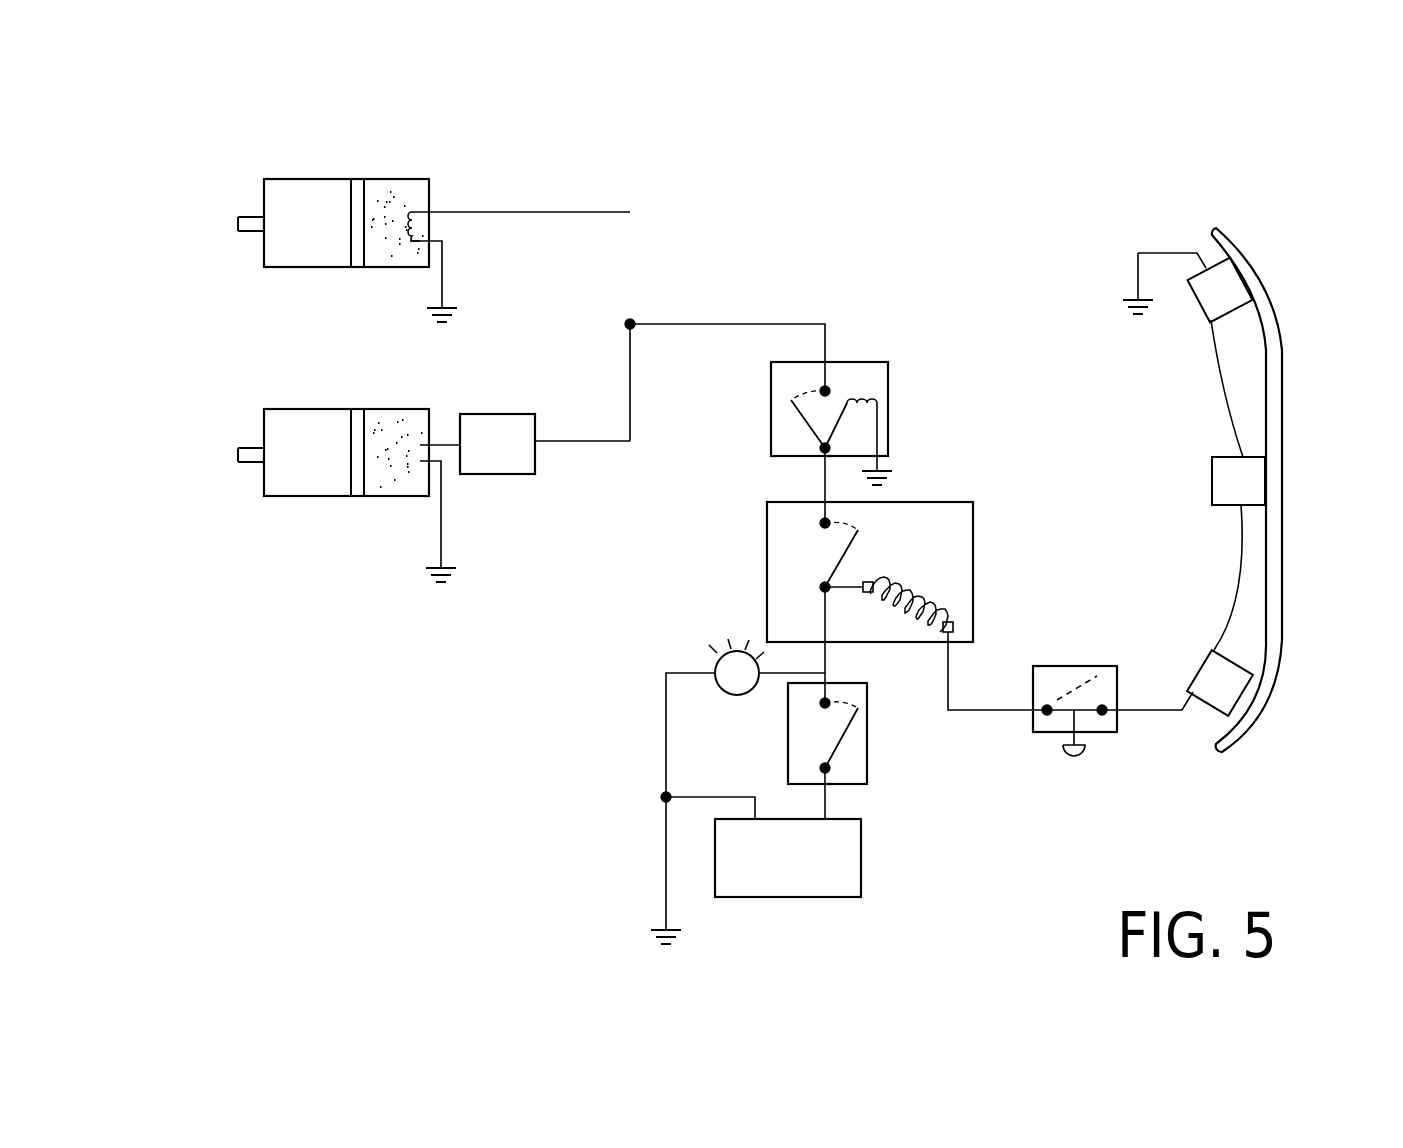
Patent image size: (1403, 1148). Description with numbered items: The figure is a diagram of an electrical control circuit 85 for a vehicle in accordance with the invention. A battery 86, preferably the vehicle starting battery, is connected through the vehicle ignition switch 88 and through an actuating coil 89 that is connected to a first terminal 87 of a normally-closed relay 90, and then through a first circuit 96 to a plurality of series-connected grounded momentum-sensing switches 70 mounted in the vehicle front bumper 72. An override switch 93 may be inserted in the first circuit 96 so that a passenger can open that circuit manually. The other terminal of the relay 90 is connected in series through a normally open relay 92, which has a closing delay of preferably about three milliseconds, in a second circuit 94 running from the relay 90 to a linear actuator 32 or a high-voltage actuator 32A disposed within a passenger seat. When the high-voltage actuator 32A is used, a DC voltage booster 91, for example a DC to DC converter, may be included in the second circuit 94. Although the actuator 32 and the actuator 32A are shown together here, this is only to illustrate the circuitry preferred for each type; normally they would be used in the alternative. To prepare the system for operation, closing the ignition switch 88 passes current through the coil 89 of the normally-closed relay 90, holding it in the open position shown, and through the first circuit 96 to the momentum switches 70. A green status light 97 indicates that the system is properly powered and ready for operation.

The linear actuator 32 is at (323, 179).
The high-voltage linear actuator 32A is at (313, 409).
The circuit 85 is at (913, 187).
The battery 86 is at (788, 858).
The first terminal 87 is at (822, 590).
The ignition switch 88 is at (867, 735).
The actuating coil 89 is at (822, 527).
The normally-closed relay 90 is at (973, 505).
The DC voltage booster 91 is at (545, 399).
The normally open relay 92 is at (888, 378).
The override switch 93 is at (1080, 666).
The second circuit 94 is at (762, 322).
The first circuit 96 is at (985, 712).
The green status light 97 is at (737, 695).
The momentum-sensing switches 70 is at (1194, 484).
The vehicle front bumper 72 is at (1282, 376).